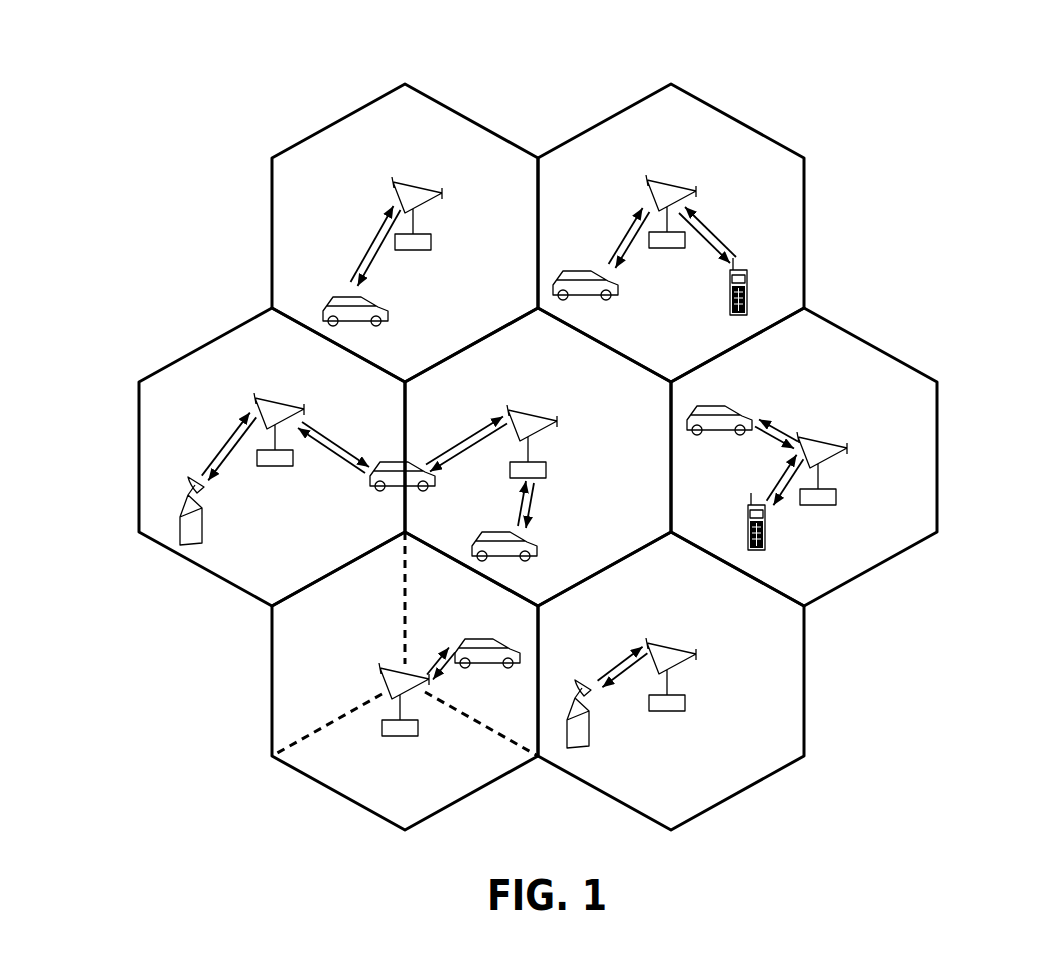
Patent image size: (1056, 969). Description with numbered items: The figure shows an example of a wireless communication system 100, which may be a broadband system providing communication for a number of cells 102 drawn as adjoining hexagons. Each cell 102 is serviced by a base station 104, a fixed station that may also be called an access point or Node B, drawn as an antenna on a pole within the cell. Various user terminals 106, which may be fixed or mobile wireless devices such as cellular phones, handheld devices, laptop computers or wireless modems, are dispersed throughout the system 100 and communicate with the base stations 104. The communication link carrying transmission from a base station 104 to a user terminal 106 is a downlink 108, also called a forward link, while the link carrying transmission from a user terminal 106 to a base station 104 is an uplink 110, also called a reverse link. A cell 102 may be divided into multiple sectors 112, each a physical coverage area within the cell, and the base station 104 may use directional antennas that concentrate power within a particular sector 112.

The wireless communication system 100 is at (922, 95).
The cell 102 is at (347, 113).
The base station 104 is at (402, 181).
The user terminal 106 is at (348, 298).
The downlink 108 is at (380, 259).
The uplink 110 is at (365, 245).
The sector 112 is at (287, 672).